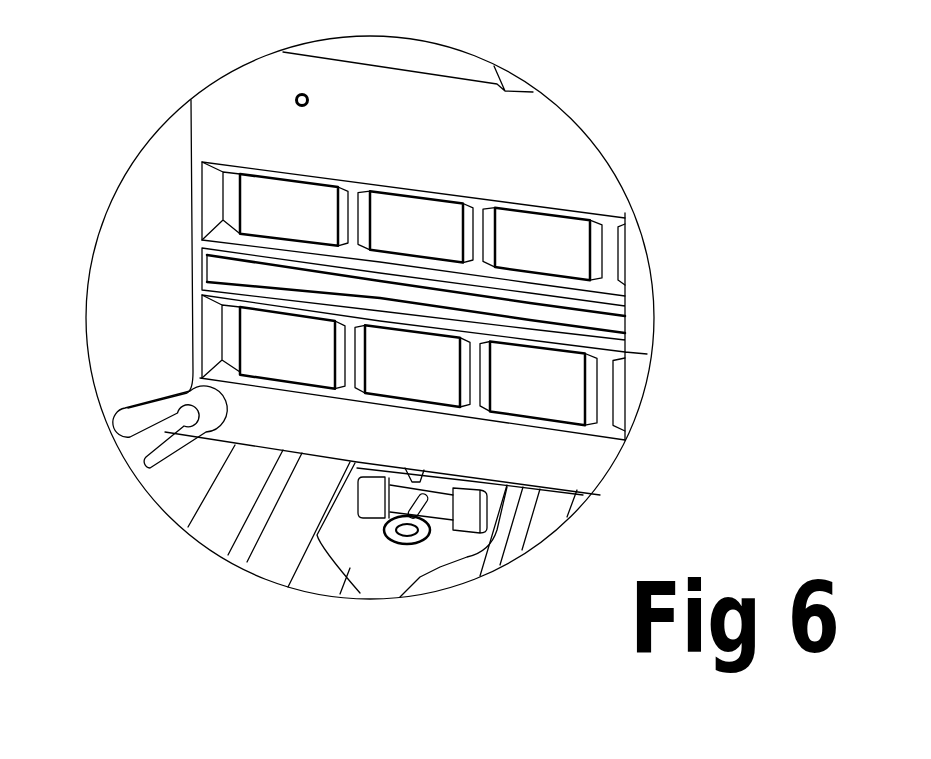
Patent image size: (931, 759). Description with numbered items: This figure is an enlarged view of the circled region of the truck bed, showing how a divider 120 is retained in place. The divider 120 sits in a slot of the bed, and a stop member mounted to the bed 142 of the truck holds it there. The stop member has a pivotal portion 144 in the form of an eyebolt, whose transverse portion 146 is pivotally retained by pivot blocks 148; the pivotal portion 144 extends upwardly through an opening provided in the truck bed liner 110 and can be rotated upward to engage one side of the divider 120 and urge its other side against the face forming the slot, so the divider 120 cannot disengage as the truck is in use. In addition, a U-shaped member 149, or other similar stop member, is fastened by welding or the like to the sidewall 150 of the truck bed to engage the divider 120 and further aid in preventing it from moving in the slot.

The truck bed liner 110 is at (505, 540).
The divider 120 is at (213, 205).
The bed 142 is at (372, 573).
The pivotal portion 144 is at (393, 540).
The transverse portion 146 is at (553, 487).
The pivot blocks 148 is at (370, 477).
The U-shaped member 149 is at (133, 423).
The sidewall 150 is at (152, 305).